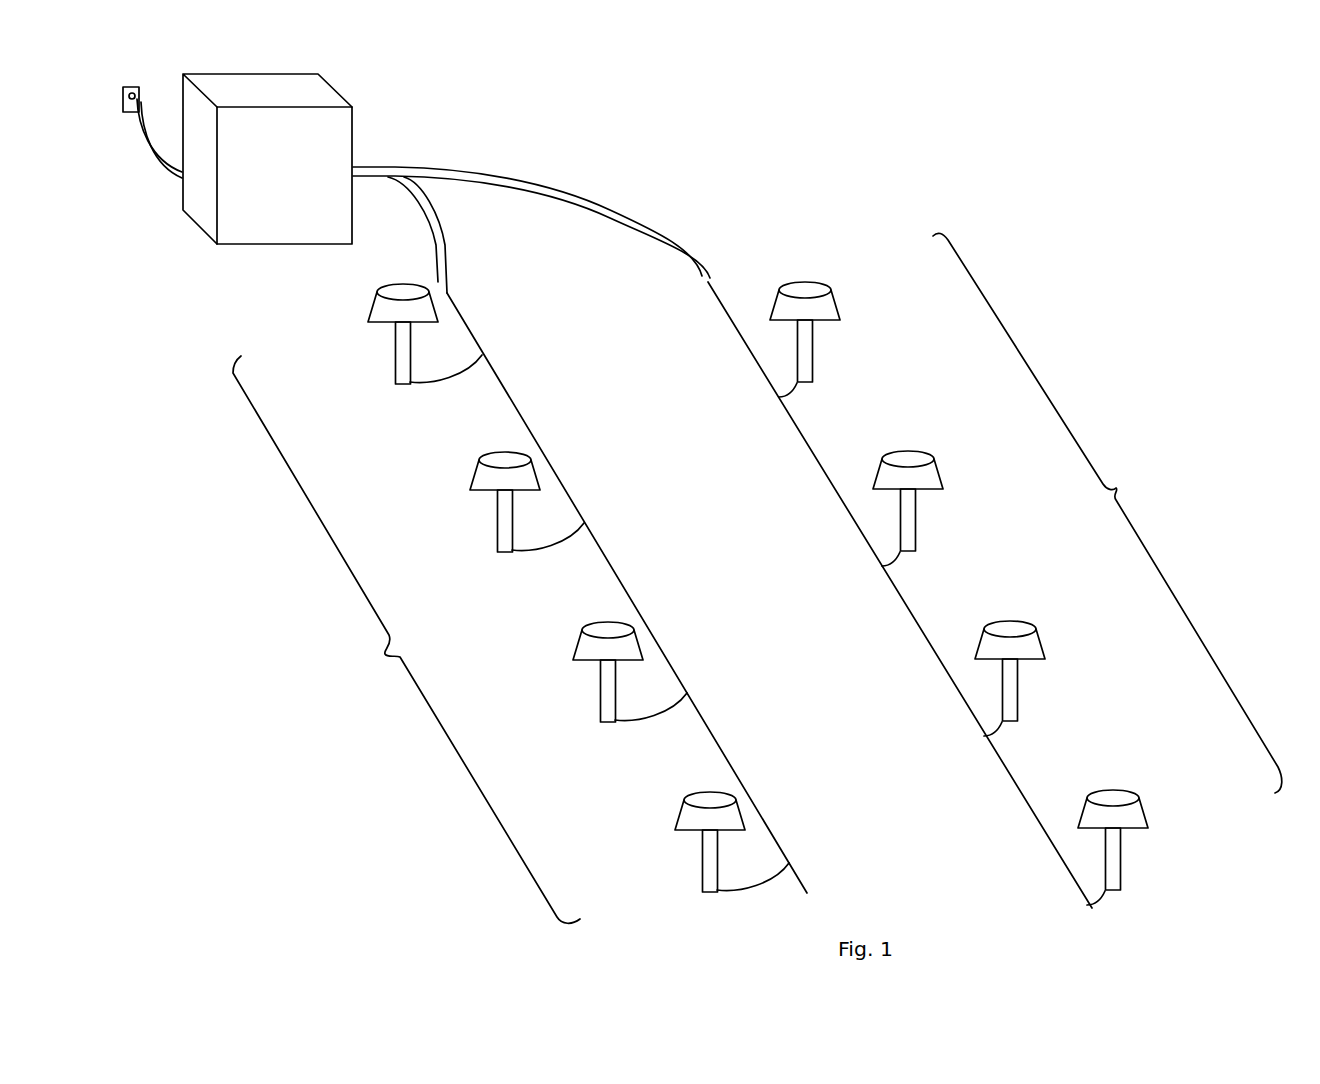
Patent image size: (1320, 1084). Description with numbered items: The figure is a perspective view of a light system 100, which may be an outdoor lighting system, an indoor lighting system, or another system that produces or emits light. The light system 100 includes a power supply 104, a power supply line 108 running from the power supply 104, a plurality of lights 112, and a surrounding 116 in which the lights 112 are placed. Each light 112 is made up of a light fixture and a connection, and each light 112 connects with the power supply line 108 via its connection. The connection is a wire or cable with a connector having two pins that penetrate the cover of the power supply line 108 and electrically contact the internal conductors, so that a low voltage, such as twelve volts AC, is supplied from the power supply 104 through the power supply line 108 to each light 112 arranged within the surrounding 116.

The light system 100 is at (1071, 168).
The power supply 104 is at (353, 140).
The power supply line 108 is at (573, 192).
The light 112 is at (388, 655).
The surrounding 116 is at (534, 265).